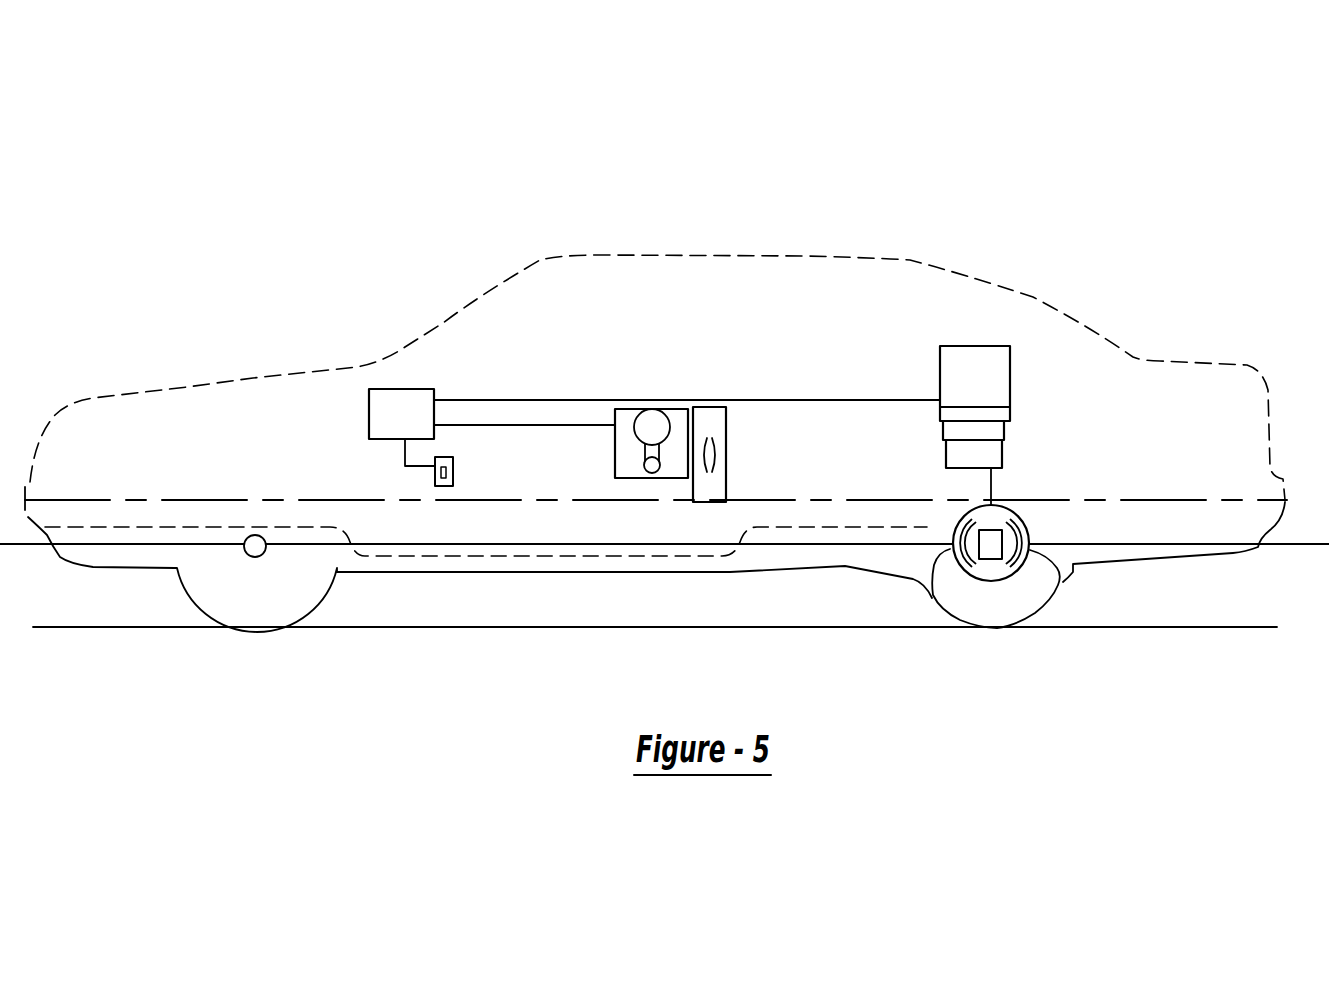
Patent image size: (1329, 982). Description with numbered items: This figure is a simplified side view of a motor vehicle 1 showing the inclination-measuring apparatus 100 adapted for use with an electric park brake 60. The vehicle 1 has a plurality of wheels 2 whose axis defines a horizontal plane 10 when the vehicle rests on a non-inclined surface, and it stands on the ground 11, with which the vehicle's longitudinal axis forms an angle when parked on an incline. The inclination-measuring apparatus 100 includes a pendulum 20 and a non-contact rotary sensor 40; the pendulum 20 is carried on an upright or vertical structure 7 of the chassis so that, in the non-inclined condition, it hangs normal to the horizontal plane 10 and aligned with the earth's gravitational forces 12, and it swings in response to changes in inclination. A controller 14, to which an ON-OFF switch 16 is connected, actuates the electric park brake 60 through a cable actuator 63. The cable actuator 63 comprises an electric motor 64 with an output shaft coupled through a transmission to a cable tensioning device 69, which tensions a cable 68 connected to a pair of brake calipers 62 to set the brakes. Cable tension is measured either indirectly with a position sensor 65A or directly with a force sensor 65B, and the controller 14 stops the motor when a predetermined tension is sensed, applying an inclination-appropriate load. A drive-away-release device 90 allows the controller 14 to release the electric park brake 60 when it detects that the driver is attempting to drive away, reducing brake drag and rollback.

The motor vehicle 1 is at (560, 250).
The wheels 2 is at (327, 593).
The upright or vertical structure 7 is at (727, 473).
The horizontal plane 10 is at (1272, 547).
The ground 11 is at (170, 630).
The earth's gravitational forces 12 is at (690, 592).
The controller 14 is at (393, 413).
The ON-OFF switch 16 is at (435, 482).
The pendulum 20 is at (657, 395).
The non-contact rotary sensor 40 is at (685, 388).
The electric park brake 60 is at (1030, 288).
The brake calipers 62 is at (928, 598).
The cable actuator 63 is at (977, 351).
The electric motor 64 is at (973, 346).
The position sensor 65A is at (1035, 408).
The force sensor 65B is at (1007, 430).
The cable 68 is at (993, 488).
The cable tensioning device 69 is at (1003, 458).
The drive-away-release device 90 is at (1062, 388).
The inclination-measuring apparatus 100 is at (278, 345).